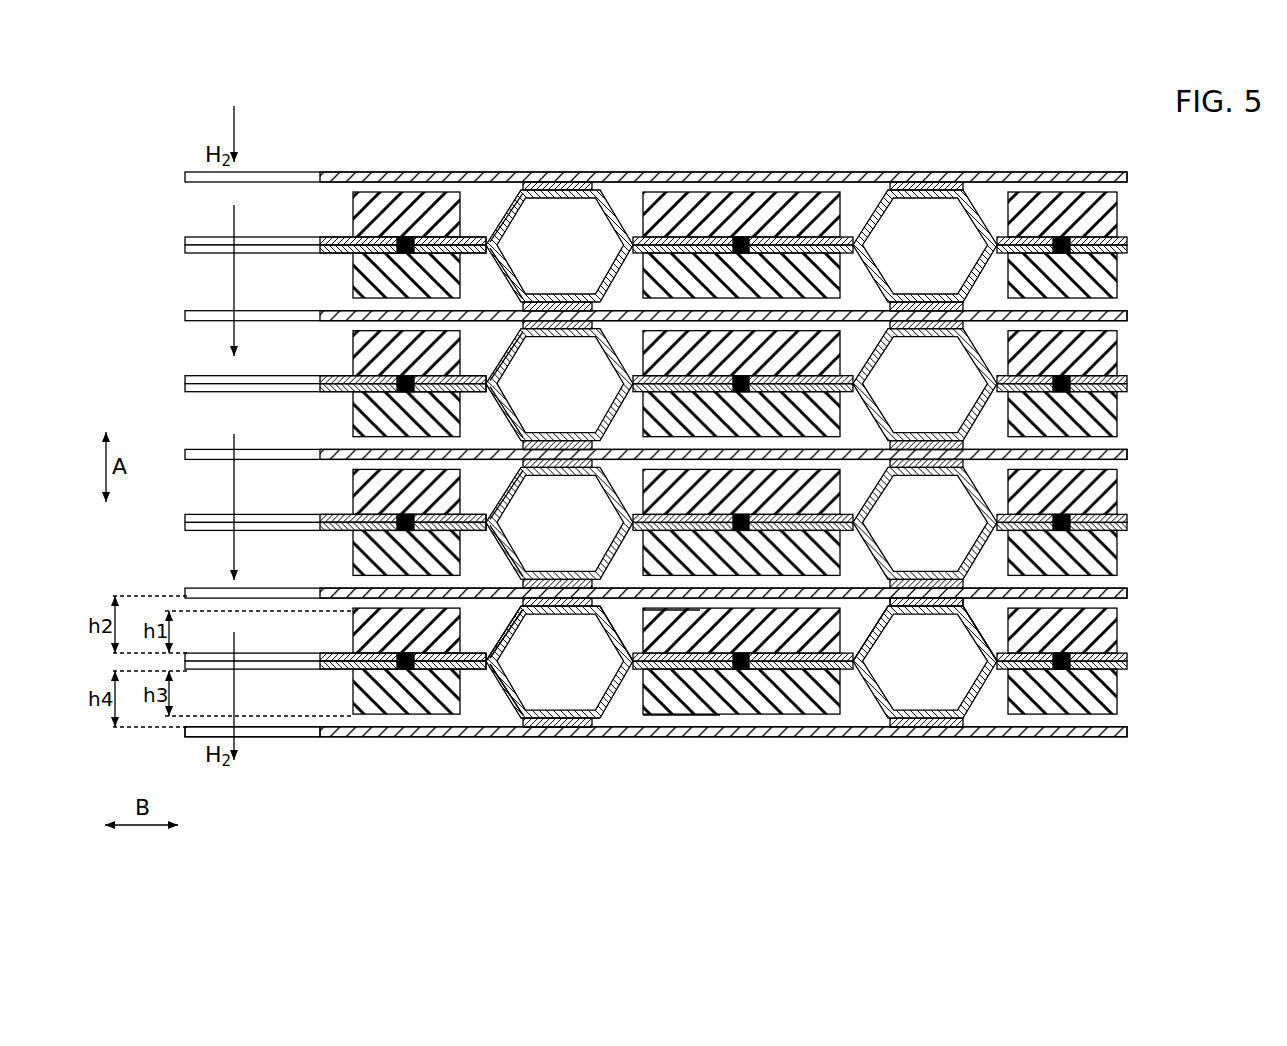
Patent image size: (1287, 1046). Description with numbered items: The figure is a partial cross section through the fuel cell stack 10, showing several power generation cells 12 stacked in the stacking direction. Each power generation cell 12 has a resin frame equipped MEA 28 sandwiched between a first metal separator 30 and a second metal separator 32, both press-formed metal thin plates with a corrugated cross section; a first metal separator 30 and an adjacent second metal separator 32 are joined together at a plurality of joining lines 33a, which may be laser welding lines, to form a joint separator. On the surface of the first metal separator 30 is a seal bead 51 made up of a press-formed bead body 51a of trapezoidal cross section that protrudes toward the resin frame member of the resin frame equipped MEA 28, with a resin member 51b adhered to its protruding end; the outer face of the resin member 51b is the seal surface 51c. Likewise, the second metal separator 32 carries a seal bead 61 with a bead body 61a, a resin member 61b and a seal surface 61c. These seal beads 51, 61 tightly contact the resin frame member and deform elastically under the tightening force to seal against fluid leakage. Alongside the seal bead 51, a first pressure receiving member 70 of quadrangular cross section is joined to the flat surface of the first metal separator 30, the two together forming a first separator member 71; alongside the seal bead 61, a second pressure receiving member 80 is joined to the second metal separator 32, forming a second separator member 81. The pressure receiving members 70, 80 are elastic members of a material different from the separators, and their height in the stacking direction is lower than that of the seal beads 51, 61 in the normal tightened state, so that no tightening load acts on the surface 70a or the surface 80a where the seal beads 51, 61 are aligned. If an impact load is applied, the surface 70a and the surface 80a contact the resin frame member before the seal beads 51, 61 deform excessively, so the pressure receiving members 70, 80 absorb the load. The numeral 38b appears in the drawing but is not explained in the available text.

The fuel cell stack 10 is at (1125, 139).
The power generation cell 12 is at (1242, 451).
The resin frame equipped MEA 28 is at (1190, 738).
The first metal separator 30 is at (703, 442).
The second metal separator 32 is at (688, 467).
The joining line 33a is at (734, 512).
The separator flat portion 38b is at (279, 740).
The seal bead 51 is at (741, 569).
The bead body 51a is at (968, 615).
The resin member 51b is at (913, 604).
The seal surface 51c is at (932, 596).
The seal bead 61 is at (747, 508).
The bead body 61a is at (505, 700).
The resin member 61b is at (540, 730).
The seal surface 61c is at (568, 728).
The first pressure receiving member 70 is at (749, 507).
The surface of the first pressure receiving member 70a is at (683, 600).
The first separator member 71 is at (1236, 429).
The second pressure receiving member 80 is at (772, 546).
The surface of the second pressure receiving member 80a is at (697, 718).
The second separator member 81 is at (1209, 489).